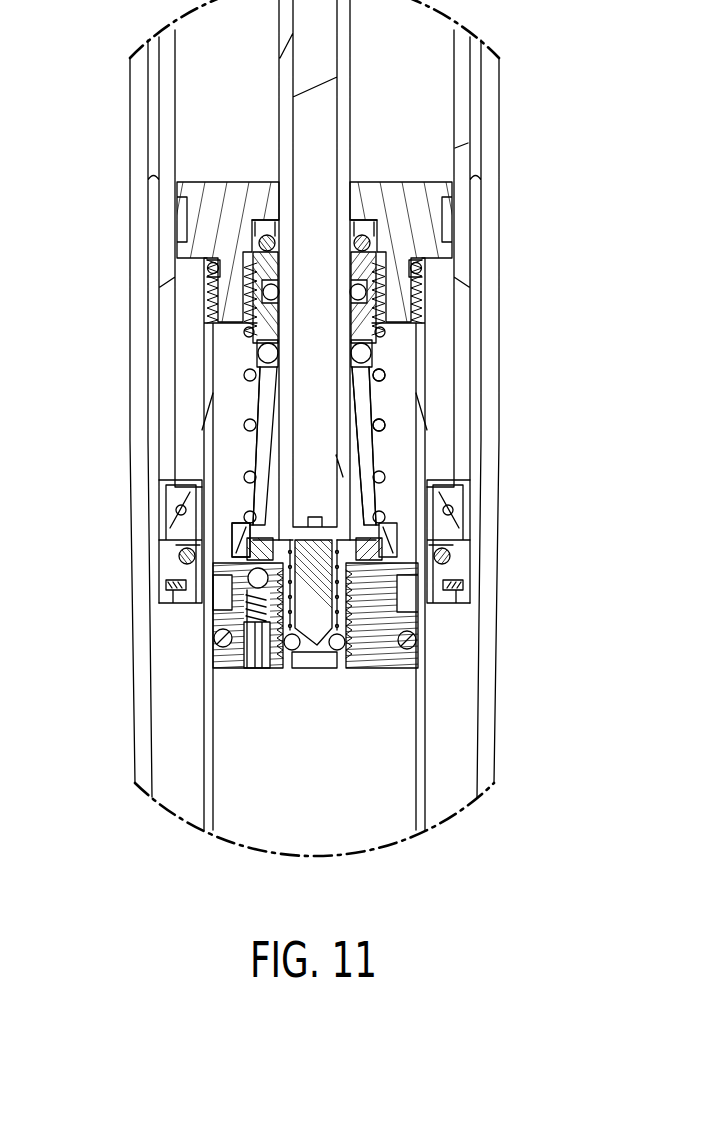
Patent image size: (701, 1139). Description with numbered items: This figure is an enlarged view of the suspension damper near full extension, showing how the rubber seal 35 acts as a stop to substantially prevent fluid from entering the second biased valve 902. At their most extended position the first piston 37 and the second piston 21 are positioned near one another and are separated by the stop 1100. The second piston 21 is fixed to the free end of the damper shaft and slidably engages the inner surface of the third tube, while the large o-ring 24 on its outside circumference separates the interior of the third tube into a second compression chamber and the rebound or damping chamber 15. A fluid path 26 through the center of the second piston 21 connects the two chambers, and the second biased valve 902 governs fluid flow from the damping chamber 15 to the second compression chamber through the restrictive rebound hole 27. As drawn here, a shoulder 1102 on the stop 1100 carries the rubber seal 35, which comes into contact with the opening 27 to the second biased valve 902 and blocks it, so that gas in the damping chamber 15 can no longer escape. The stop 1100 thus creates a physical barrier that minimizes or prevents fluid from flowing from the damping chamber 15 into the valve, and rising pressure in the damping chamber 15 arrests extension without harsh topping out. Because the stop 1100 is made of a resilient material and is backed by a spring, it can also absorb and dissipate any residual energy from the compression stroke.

The first piston 37 is at (423, 218).
The stop 1100 is at (383, 373).
The damping chamber 15 is at (402, 441).
The shoulder 1102 is at (237, 537).
The rebound hole 27 is at (250, 565).
The second biased valve 902 is at (213, 622).
The rubber seal 35 is at (380, 548).
The large o-ring 24 is at (418, 640).
The second piston 21 is at (373, 657).
The fluid path 26 is at (312, 662).